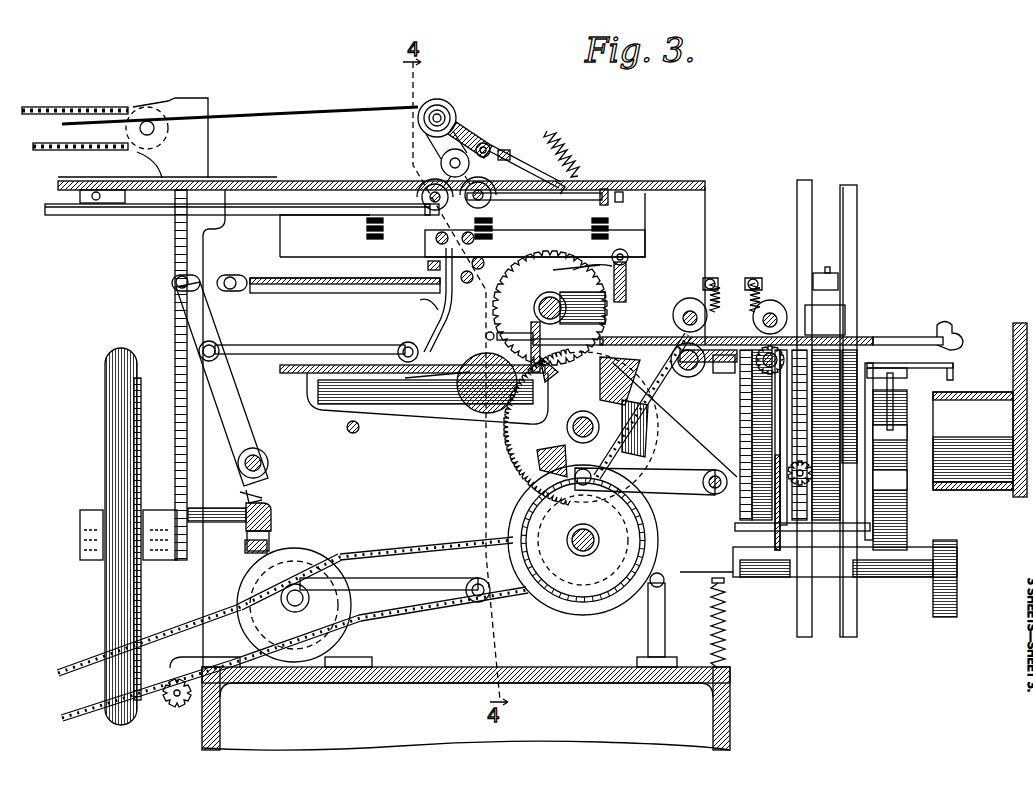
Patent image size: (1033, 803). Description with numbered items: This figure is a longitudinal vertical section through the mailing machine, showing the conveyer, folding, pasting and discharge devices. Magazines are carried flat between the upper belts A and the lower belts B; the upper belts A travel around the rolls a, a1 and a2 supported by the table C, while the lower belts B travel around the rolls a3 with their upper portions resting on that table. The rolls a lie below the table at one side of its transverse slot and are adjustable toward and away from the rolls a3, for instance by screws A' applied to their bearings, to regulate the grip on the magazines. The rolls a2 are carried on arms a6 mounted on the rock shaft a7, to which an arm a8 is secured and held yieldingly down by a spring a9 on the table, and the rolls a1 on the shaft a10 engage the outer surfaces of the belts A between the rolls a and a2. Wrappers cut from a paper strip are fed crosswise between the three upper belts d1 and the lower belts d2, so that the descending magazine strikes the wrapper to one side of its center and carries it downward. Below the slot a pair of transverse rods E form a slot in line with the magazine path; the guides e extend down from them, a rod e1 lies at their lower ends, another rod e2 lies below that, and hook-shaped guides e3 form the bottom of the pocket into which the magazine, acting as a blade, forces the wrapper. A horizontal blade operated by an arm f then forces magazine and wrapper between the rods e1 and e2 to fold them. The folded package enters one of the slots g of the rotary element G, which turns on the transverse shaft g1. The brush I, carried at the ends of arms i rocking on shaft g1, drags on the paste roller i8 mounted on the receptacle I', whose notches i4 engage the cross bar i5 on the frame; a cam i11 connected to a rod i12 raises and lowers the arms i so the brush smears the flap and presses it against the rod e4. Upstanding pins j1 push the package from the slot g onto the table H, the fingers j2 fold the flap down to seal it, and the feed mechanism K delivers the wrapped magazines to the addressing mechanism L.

The upper belts A is at (240, 142).
The screws A' is at (381, 246).
The lower belts B is at (58, 179).
The table C is at (590, 192).
The transverse rods E is at (705, 496).
The bar F' is at (345, 301).
The rotary element G is at (608, 306).
The table H is at (622, 342).
The brush I is at (476, 338).
The receptacle I' is at (414, 414).
The feed mechanism K is at (668, 392).
The addressing mechanism L is at (838, 323).
The rolls a is at (479, 190).
The rolls a1 is at (450, 160).
The rolls a2 is at (439, 100).
The rolls a3 is at (432, 216).
The arms a6 is at (470, 134).
The rock shaft a7 is at (487, 144).
The arm a8 is at (515, 163).
The spring a9 is at (575, 160).
The shaft a10 is at (432, 188).
The upper belts d1 is at (366, 226).
The lower belts d2 is at (440, 236).
The guides e is at (440, 256).
The rod e1 is at (466, 282).
The rod e2 is at (466, 296).
The hook-shaped guides e3 is at (445, 318).
The rod e4 is at (486, 268).
The arm f is at (215, 346).
The slots g is at (576, 270).
The shaft g1 is at (566, 308).
The arms i is at (256, 502).
The notches i4 is at (400, 420).
The cross bar i5 is at (352, 433).
The paste roller i8 is at (470, 405).
The cam i11 is at (582, 606).
The rod i12 is at (662, 430).
The upstanding pins j1 is at (583, 411).
The fingers j2 is at (630, 273).